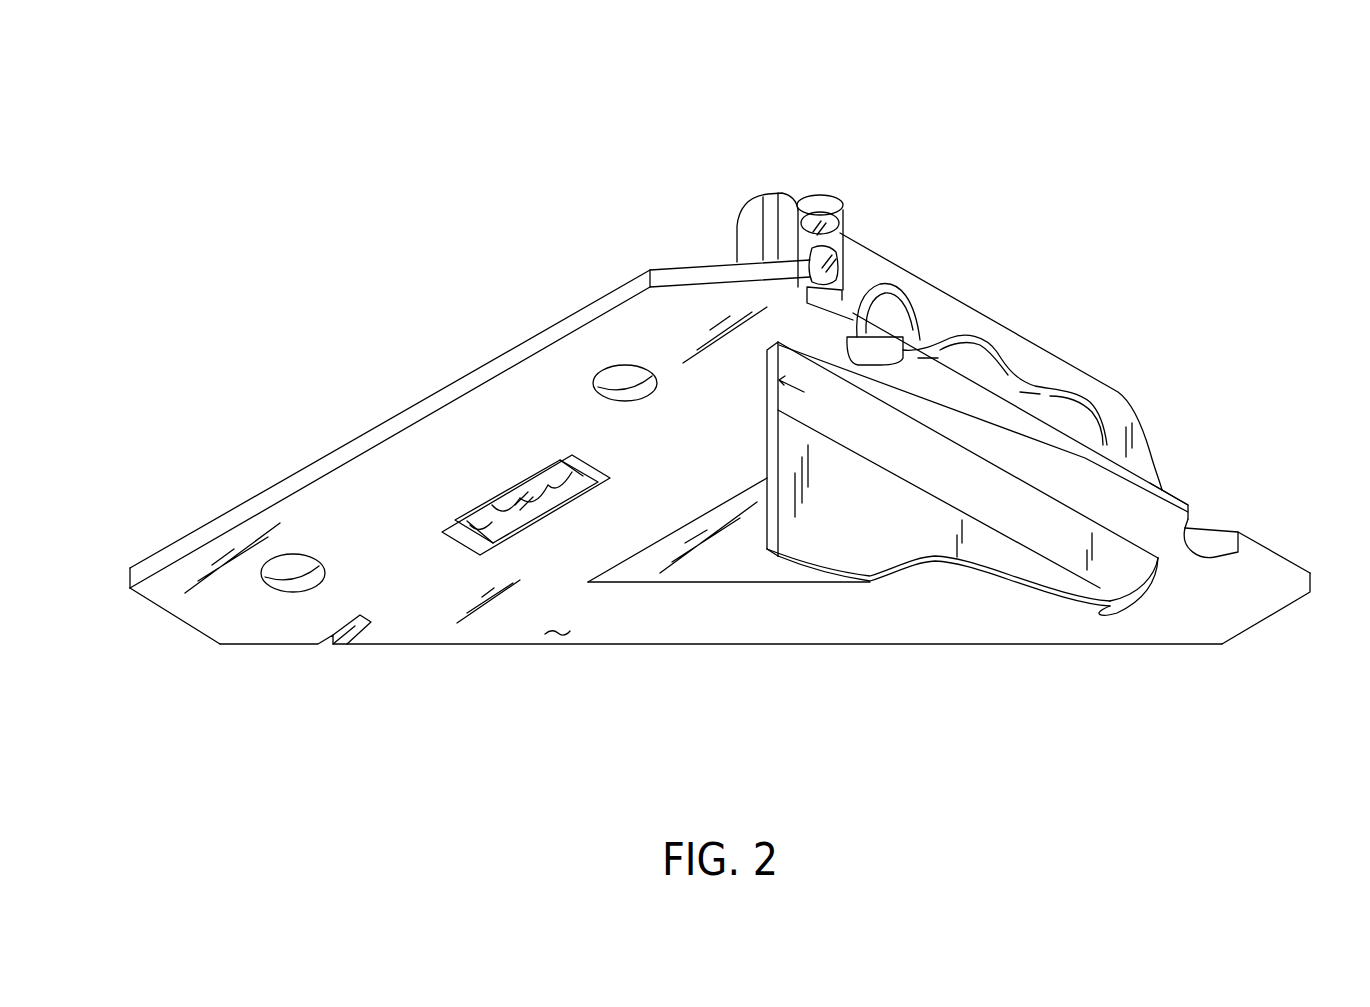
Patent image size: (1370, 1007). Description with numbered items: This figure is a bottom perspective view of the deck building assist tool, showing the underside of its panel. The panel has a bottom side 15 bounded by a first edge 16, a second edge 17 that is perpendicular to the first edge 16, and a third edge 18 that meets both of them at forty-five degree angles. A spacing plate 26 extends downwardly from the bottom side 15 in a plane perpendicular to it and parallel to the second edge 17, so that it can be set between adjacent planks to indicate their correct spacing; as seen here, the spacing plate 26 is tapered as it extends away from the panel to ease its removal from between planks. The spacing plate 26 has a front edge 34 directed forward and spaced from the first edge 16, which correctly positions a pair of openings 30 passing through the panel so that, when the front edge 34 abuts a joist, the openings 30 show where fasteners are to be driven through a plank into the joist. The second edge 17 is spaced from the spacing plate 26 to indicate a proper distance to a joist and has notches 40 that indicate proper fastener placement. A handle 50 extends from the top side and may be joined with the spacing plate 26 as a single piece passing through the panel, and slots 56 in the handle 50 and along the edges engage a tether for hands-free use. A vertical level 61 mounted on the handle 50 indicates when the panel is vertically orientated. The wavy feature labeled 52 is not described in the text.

The bottom side 15 is at (548, 637).
The first edge 16 is at (403, 412).
The second edge 17 is at (1163, 490).
The third edge 18 is at (962, 646).
The spacing plate 26 is at (1108, 604).
The openings 30 is at (275, 577).
The front edge 34 is at (771, 497).
The notches 40 is at (878, 347).
The handle 50 is at (1110, 385).
The wavy grip ridge 52 is at (1013, 378).
The slots 56 is at (355, 632).
The vertical level 61 is at (838, 242).